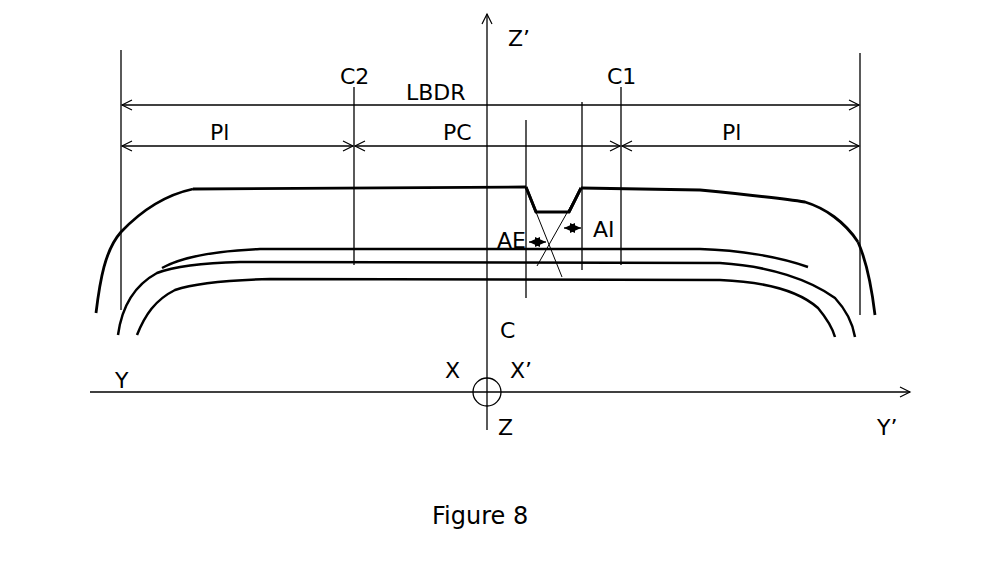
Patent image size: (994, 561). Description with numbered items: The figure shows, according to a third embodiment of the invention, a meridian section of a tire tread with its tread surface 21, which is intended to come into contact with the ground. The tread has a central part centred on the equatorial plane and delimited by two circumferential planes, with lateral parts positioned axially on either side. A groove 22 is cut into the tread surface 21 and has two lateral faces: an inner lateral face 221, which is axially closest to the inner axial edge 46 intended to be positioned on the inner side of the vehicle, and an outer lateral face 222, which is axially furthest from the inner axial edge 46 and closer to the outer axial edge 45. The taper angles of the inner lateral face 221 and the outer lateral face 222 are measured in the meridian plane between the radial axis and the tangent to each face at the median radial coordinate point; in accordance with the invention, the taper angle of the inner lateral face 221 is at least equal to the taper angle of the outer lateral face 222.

The tread surface 21 is at (711, 185).
The groove 22 is at (555, 190).
The inner lateral face 221 is at (585, 203).
The outer lateral face 222 is at (523, 198).
The outer axial edge 45 is at (113, 241).
The inner axial edge 46 is at (868, 255).